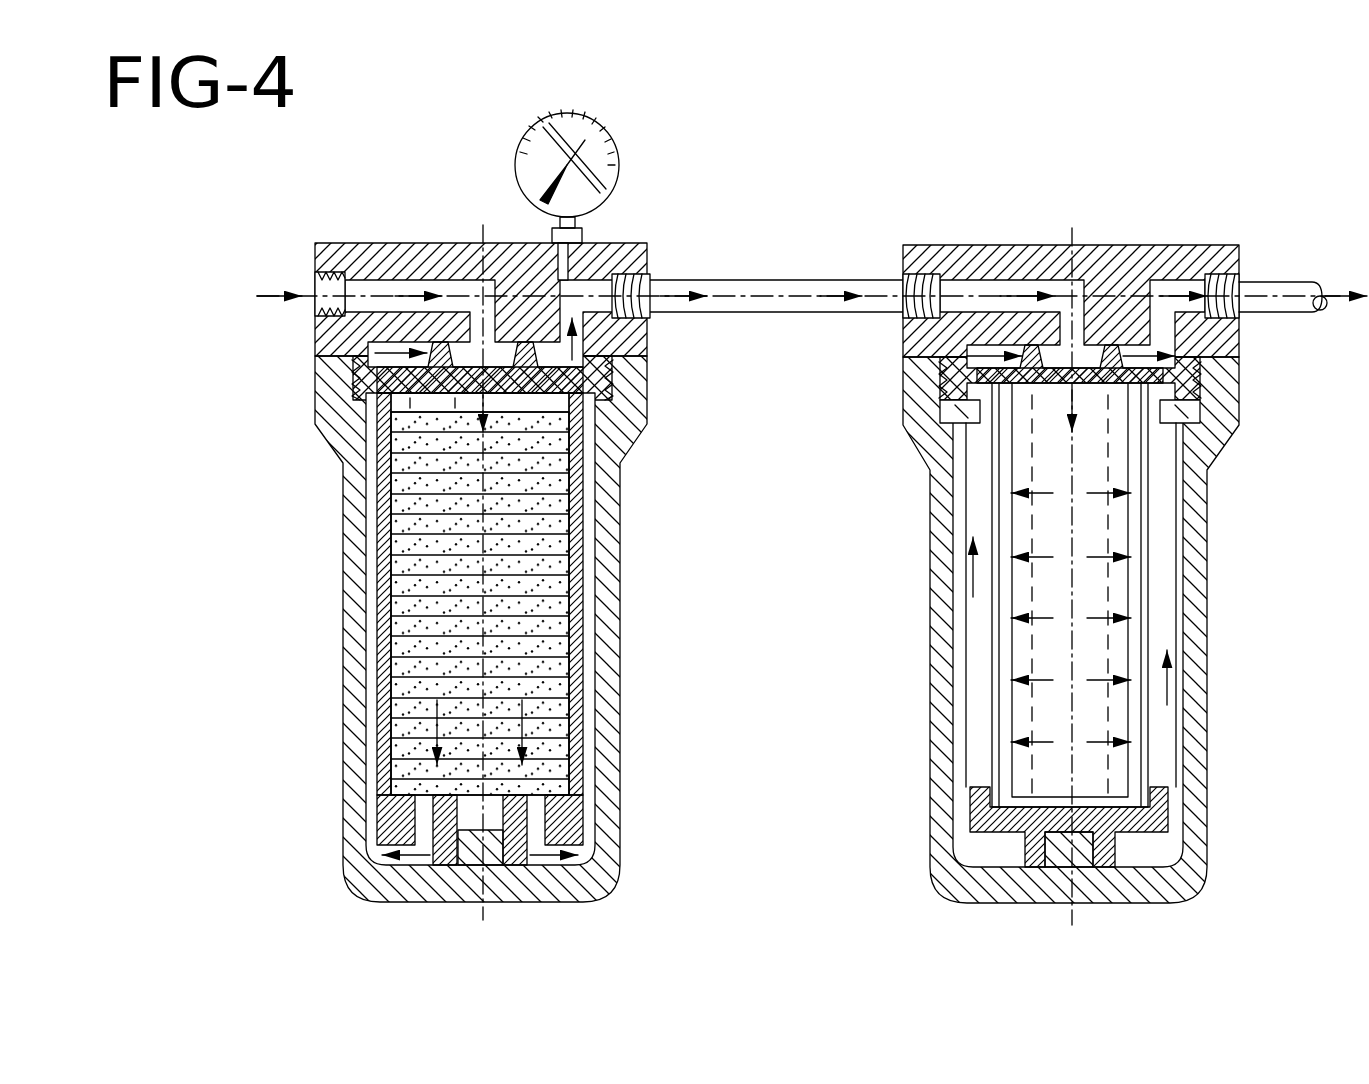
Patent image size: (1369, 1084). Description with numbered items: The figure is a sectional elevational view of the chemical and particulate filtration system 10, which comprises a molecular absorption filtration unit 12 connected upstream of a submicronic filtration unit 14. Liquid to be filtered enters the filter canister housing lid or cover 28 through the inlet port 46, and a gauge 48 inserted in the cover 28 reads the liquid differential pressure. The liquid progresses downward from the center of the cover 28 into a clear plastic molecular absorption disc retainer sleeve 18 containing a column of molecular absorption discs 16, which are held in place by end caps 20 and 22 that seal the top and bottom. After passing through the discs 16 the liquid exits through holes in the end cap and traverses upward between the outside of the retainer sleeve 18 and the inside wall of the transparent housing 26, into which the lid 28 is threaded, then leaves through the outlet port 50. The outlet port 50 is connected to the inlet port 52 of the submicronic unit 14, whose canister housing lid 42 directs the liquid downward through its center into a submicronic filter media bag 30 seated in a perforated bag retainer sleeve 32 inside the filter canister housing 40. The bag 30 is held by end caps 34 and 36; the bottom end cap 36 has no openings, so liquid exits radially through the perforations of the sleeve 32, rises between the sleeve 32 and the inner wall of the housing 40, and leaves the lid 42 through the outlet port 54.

The chemical and particulate filtration system 10 is at (1202, 203).
The molecular absorption filtration media unit 12 is at (622, 778).
The submicronic filtration media unit 14 is at (1212, 782).
The molecular absorption discs 16 is at (440, 655).
The molecular absorption disc retainer sleeve 18 is at (378, 528).
The end cap 20 is at (577, 397).
The end cap 22 is at (395, 830).
The transparent housing 26 is at (343, 436).
The filter canister housing lid or cover 28 is at (388, 256).
The submicronic filter media bag 30 is at (1140, 455).
The perforated bag retainer sleeve 32 is at (970, 660).
The end cap 34 is at (970, 373).
The bottom end cap 36 is at (1160, 845).
The filter canister housing 40 is at (1207, 730).
The canister housing lid 42 is at (967, 258).
The inlet port 46 is at (318, 313).
The gauge 48 is at (597, 123).
The outlet port 50 is at (647, 318).
The inlet port 52 is at (903, 283).
The outlet port 54 is at (1240, 318).